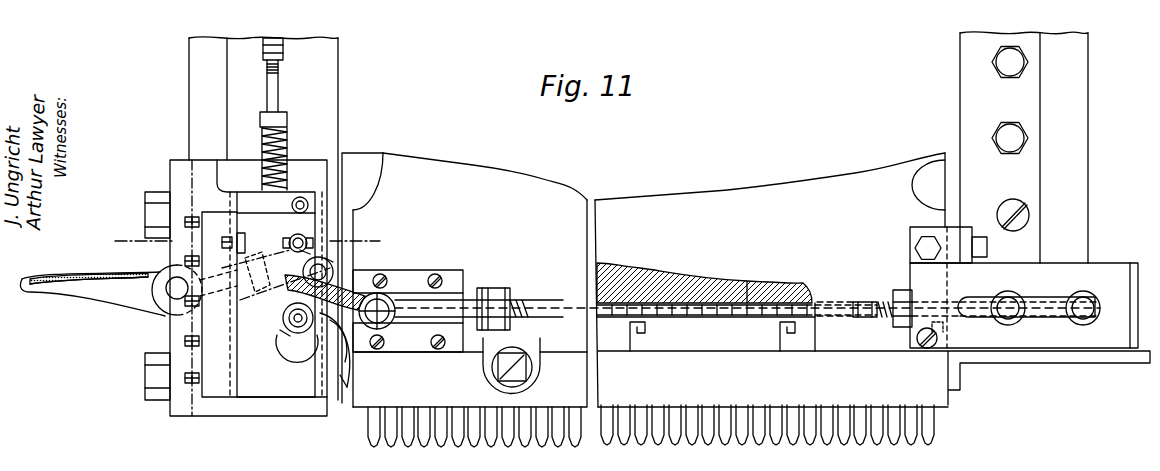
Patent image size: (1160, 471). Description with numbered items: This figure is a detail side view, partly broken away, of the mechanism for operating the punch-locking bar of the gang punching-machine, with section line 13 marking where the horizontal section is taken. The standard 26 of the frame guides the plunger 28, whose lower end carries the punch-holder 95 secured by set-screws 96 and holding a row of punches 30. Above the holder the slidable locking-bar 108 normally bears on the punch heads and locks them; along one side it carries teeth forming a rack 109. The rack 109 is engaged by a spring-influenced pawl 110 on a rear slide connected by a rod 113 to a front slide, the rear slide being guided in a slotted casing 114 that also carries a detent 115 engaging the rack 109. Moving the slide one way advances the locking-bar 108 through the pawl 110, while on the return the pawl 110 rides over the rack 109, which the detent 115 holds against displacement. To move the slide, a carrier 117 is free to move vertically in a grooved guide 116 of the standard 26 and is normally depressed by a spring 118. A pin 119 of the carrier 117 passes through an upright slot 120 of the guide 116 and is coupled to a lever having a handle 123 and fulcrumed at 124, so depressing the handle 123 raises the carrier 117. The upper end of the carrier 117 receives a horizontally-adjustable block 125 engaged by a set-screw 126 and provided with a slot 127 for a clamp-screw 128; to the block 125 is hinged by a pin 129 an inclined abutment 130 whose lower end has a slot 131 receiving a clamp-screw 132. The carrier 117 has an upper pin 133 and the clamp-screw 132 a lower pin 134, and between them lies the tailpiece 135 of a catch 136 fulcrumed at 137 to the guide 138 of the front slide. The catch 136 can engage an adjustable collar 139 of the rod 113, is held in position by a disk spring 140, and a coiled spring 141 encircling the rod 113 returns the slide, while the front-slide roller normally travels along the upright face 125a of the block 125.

The section line 13 is at (243, 241).
The standard 26 is at (638, 216).
The plunger 28 is at (643, 280).
The punches 30 is at (442, 434).
The punch-holder 95 is at (751, 379).
The set-screws 96 is at (545, 380).
The locking-bar 108 is at (670, 323).
The rack 109 is at (678, 310).
The pawl 110 is at (1013, 300).
The rod 113 is at (543, 300).
The slotted casing 114 is at (1024, 287).
The detent 115 is at (1088, 300).
The grooved guide 116 is at (236, 288).
The carrier 117 is at (284, 318).
The spring 118 is at (262, 145).
The pin 119 is at (246, 294).
The upright slot 120 is at (286, 327).
The handle 123 is at (72, 287).
The fulcrum 124 is at (176, 300).
The block 125 is at (298, 234).
The upright face 125a is at (330, 250).
The set-screw 126 is at (226, 236).
The slot 127 is at (330, 236).
The clamp-screw 128 is at (276, 294).
The pin 129 is at (330, 268).
The inclined rail or abutment 130 is at (353, 370).
The slot 131 is at (296, 345).
The clamp-screw 132 is at (380, 390).
The upper pin 133 is at (301, 197).
The lower pin 134 is at (288, 337).
The tailpiece 135 is at (280, 298).
The catch 136 is at (465, 305).
The fulcrum 137 is at (392, 318).
The guide 138 is at (408, 311).
The adjustable collar 139 is at (490, 290).
The disk spring 140 is at (385, 318).
The coiled spring 141 is at (325, 292).